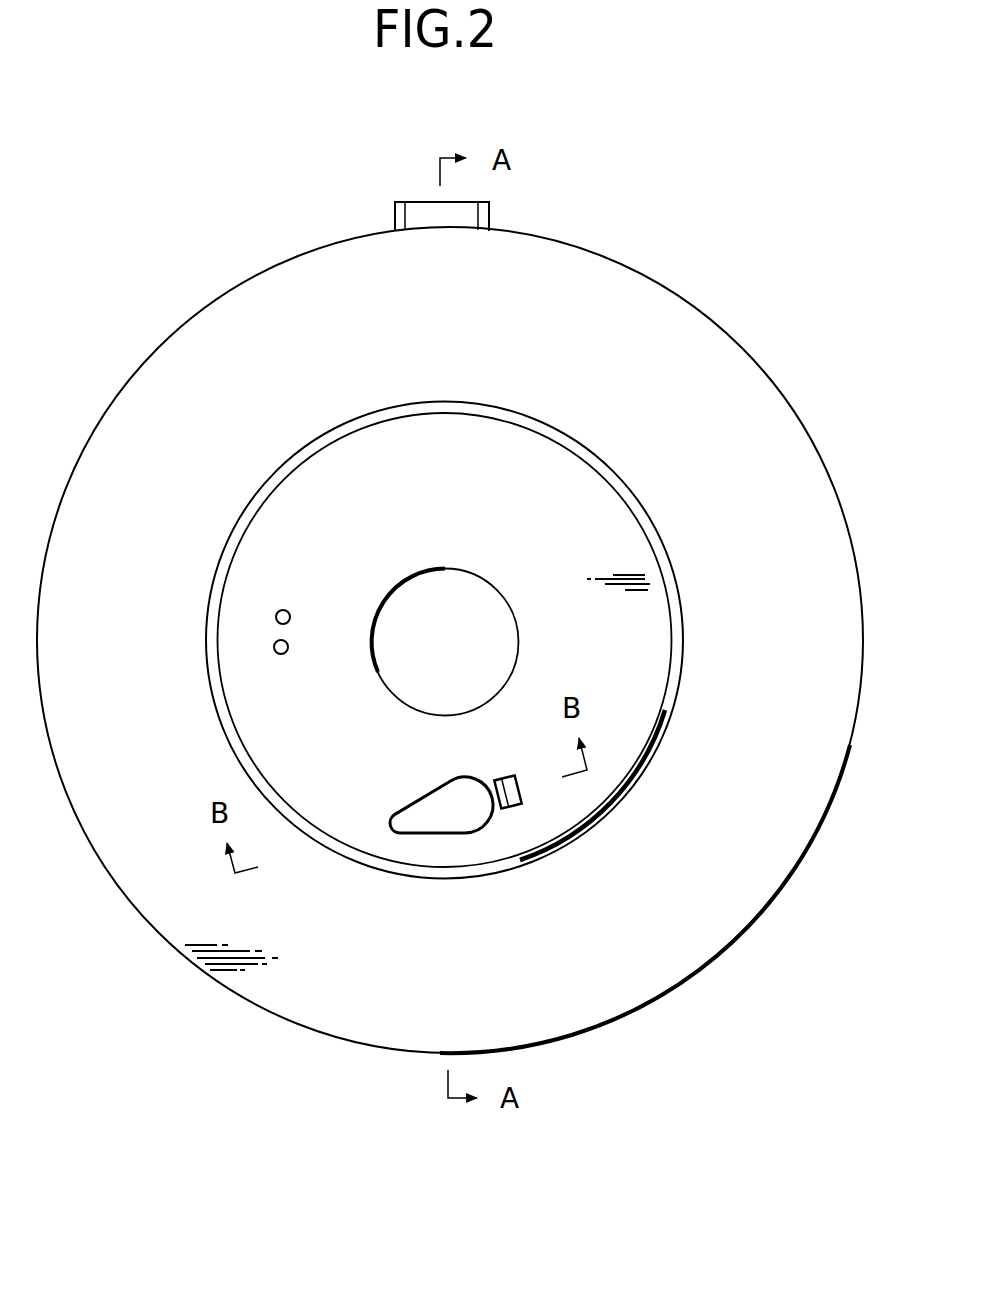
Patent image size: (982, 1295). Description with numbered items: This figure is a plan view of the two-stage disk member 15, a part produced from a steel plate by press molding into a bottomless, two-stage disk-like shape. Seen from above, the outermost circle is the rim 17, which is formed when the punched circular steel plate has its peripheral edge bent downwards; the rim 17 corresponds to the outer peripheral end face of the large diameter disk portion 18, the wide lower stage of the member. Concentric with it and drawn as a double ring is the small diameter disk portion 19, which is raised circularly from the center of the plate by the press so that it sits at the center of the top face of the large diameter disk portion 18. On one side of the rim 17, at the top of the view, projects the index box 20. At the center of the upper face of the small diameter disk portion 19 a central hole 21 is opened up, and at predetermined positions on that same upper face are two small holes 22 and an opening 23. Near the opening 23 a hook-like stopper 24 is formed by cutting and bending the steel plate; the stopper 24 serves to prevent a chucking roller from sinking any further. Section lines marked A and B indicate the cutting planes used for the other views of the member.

The two-stage disk member 15 is at (470, 640).
The rim 17 is at (810, 442).
The large diameter disk portion 18 is at (836, 553).
The small diameter disk portion 19 is at (593, 498).
The index box 20 is at (413, 201).
The central hole 21 is at (434, 569).
The small holes 22 is at (290, 621).
The opening 23 is at (421, 809).
The hook-like stopper 24 is at (521, 791).